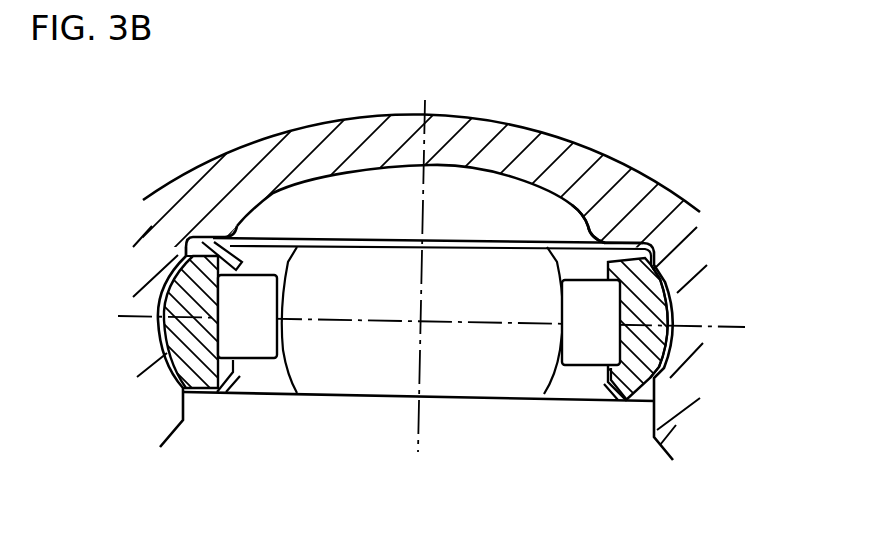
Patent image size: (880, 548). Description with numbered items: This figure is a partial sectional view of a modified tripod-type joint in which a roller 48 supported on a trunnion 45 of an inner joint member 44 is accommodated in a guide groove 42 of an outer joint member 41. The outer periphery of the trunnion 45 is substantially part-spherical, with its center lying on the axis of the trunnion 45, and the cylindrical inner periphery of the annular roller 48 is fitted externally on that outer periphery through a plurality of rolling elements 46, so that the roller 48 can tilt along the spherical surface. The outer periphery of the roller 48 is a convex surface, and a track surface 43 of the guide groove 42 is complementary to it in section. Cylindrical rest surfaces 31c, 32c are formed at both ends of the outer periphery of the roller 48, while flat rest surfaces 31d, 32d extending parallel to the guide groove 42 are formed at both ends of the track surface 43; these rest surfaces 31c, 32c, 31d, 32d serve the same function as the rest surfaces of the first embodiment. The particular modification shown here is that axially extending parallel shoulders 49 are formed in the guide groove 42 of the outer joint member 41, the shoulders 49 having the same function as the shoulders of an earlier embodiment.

The cylindrical rest surface 31c is at (208, 244).
The flat rest surface 31d is at (175, 247).
The cylindrical rest surface 32c is at (291, 385).
The flat rest surface 32d is at (178, 384).
The outer joint member 41 is at (390, 113).
The guide groove 42 is at (470, 195).
The track surface 43 is at (168, 340).
The inner joint member 44 is at (547, 397).
The trunnion 45 is at (449, 395).
The rolling elements 46 is at (560, 358).
The roller 48 is at (662, 352).
The shoulders 49 is at (588, 216).